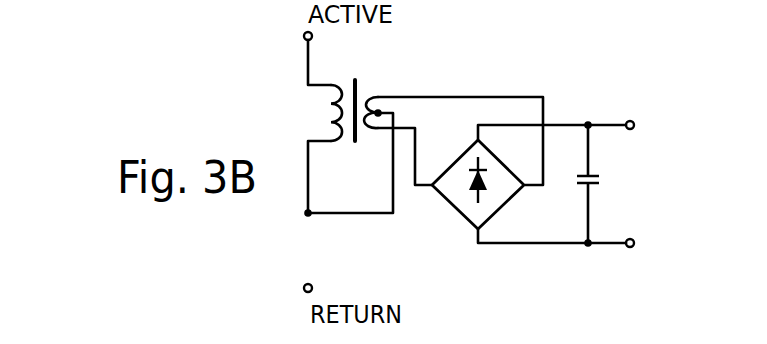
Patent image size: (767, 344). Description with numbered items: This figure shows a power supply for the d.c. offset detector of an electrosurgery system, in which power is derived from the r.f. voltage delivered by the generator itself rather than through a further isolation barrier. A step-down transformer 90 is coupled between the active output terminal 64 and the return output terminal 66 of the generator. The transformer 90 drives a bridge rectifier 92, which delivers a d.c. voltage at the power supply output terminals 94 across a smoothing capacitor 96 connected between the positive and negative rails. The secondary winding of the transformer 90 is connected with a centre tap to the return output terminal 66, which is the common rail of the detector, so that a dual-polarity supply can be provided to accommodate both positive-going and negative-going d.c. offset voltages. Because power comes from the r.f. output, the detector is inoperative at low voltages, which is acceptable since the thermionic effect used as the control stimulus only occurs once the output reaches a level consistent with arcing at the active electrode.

The output terminal 64 is at (304, 38).
The return output terminal 66 is at (304, 288).
The step-down transformer 90 is at (376, 80).
The bridge rectifier 92 is at (459, 230).
The power supply output terminals 94 is at (697, 122).
The smoothing capacitor 96 is at (594, 186).